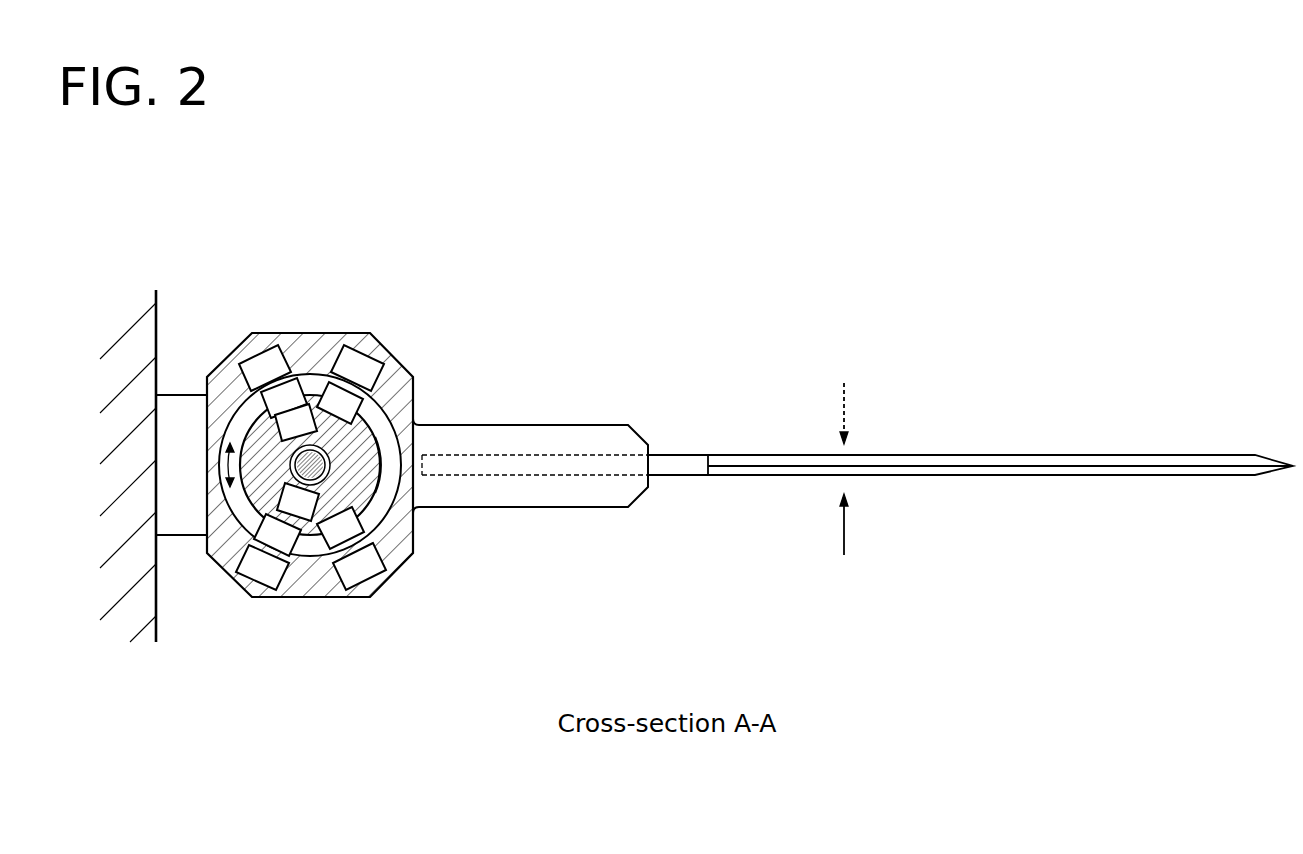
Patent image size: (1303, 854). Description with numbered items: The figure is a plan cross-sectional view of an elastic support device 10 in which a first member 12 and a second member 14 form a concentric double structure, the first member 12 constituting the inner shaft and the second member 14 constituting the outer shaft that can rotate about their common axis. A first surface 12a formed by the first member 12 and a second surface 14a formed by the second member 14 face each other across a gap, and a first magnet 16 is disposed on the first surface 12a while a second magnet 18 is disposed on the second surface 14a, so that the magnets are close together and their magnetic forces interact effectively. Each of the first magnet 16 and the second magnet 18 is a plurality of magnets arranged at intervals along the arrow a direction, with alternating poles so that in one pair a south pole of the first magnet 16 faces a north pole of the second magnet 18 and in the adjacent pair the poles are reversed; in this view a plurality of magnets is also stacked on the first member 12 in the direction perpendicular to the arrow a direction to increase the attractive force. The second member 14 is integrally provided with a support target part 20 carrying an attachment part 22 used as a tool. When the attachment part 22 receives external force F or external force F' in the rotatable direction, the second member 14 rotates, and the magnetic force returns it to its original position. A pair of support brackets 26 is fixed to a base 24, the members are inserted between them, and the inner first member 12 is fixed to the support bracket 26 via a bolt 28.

The elastic support device 10 is at (680, 233).
The first member 12 is at (311, 530).
The first surface 12a is at (378, 471).
The second member 14 is at (327, 333).
The second surface 14a is at (380, 420).
The first magnet 16 is at (241, 412).
The second magnet 18 is at (378, 357).
The support target part 20 is at (600, 423).
The attachment part 22 is at (1028, 455).
The base 24 is at (123, 630).
The support bracket 26 is at (178, 407).
The bolt 28 is at (235, 542).
The arrow a direction a is at (228, 462).
The external force F is at (869, 524).
The external force F' is at (872, 412).